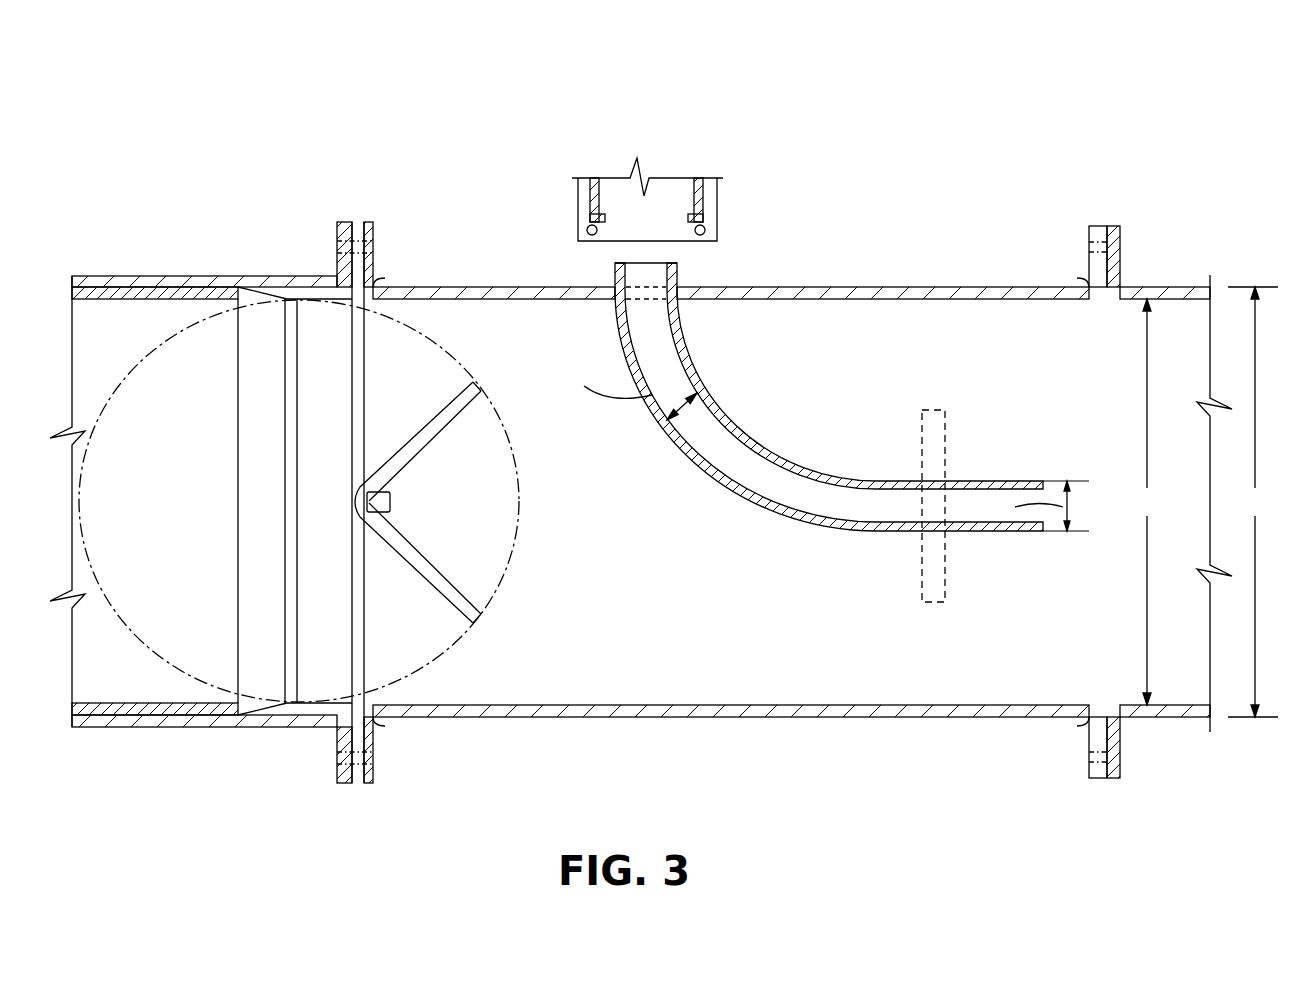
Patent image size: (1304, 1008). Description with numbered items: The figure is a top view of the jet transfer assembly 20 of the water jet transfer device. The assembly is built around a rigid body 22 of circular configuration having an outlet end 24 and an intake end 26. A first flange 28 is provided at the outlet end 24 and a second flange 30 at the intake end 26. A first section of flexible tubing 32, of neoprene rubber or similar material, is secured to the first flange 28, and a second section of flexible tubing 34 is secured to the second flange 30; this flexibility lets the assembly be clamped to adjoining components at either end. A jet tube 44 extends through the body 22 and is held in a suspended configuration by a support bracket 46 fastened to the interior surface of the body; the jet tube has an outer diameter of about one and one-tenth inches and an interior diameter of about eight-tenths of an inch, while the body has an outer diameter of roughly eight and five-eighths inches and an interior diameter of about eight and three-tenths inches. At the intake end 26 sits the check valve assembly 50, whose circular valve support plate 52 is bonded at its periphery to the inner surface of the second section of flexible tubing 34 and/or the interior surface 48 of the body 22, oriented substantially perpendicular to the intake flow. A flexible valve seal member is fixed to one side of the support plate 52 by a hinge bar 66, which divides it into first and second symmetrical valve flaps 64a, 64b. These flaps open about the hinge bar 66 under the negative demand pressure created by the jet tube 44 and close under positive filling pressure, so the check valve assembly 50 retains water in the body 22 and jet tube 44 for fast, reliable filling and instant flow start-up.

The jet transfer assembly 20 is at (866, 155).
The body 22 is at (808, 287).
The outlet end 24 is at (1195, 268).
The intake end 26 is at (93, 255).
The first flange 28 is at (1104, 236).
The second flange 30 is at (364, 226).
The first section of flexible tubing 32 is at (1157, 717).
The second section of flexible tubing 34 is at (190, 276).
The jet tube 44 is at (742, 427).
The support bracket 46 is at (703, 192).
The interior surface 48 is at (921, 440).
The check valve assembly 50 is at (375, 650).
The valve support plate 52 is at (365, 603).
The first valve flap 64a is at (447, 577).
The second valve flap 64b is at (447, 406).
The hinge bar 66 is at (388, 505).